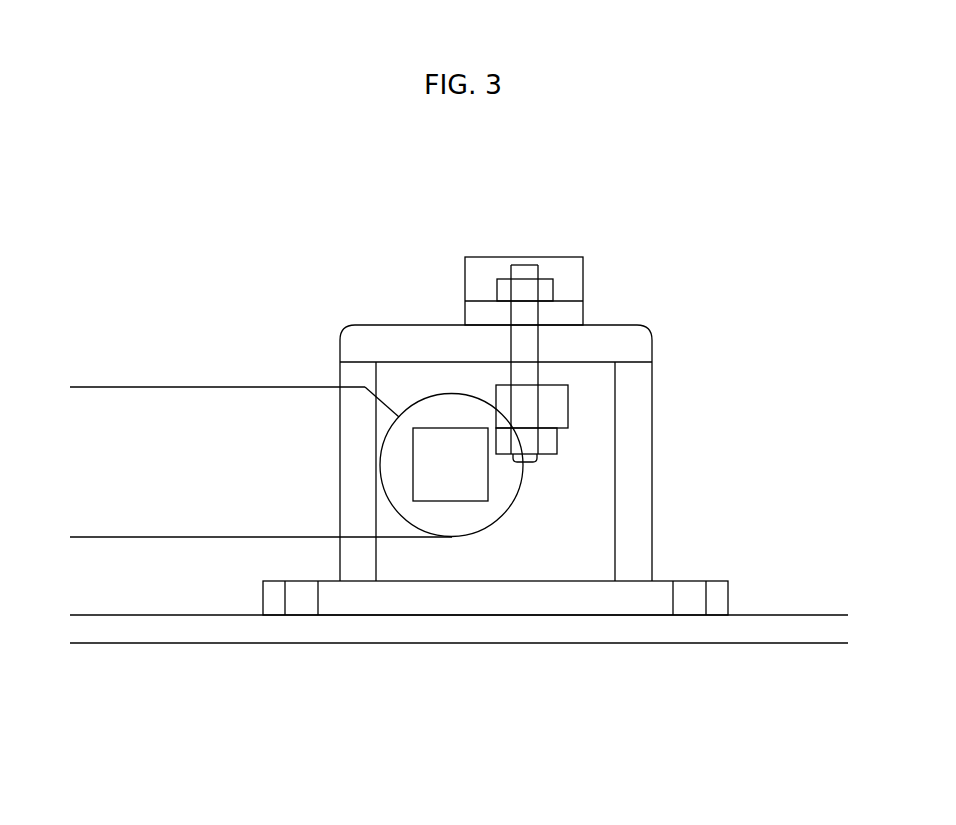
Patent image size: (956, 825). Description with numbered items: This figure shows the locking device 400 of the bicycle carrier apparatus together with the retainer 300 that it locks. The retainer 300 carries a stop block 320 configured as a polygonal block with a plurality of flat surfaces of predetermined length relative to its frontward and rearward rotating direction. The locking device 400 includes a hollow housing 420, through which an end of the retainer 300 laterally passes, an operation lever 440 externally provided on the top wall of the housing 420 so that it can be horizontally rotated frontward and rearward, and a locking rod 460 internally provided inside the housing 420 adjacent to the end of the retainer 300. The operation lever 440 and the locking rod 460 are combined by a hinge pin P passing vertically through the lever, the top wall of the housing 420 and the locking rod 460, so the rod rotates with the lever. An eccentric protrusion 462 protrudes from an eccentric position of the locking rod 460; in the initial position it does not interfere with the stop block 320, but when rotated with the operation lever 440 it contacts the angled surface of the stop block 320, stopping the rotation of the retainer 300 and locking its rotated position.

The retainer 300 is at (200, 423).
The stop block 320 is at (463, 468).
The locking device 400 is at (520, 393).
The housing 420 is at (583, 469).
The operation lever 440 is at (583, 275).
The locking rod 460 is at (549, 392).
The eccentric protrusion 462 is at (568, 406).
The hinge pin P is at (510, 350).